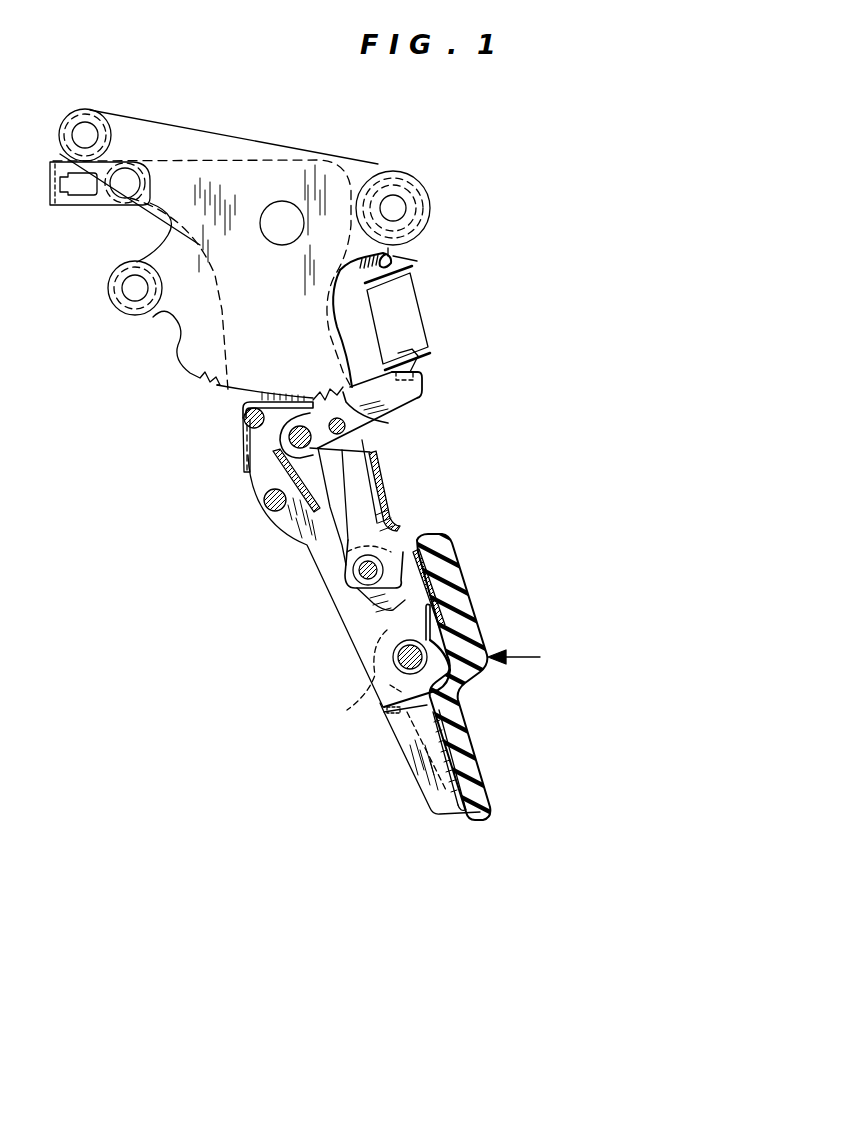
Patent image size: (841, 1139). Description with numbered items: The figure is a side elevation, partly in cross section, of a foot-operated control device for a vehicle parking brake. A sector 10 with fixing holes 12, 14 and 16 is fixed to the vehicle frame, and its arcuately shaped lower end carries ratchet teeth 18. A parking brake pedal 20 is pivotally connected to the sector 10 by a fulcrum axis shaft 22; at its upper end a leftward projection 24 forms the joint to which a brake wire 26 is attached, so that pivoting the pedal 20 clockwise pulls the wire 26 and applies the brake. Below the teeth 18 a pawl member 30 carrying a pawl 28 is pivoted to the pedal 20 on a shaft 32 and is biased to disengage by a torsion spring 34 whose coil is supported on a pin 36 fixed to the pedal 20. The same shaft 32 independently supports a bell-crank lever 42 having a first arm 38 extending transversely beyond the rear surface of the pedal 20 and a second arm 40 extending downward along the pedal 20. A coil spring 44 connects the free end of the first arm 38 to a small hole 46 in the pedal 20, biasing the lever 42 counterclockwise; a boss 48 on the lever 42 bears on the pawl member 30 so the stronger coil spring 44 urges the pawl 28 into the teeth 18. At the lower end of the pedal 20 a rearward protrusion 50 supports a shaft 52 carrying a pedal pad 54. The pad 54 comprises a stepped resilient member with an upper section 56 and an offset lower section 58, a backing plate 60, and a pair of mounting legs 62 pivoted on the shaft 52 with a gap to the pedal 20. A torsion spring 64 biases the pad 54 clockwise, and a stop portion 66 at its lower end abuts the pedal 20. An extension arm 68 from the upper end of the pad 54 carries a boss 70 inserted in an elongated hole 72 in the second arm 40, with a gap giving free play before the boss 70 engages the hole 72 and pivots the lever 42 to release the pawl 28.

The sector 10 is at (185, 137).
The fixing hole 12 is at (94, 130).
The fixing hole 14 is at (400, 205).
The fixing hole 16 is at (140, 300).
The ratchet teeth 18 is at (215, 383).
The parking brake pedal 20 is at (307, 545).
The fulcrum axis shaft 22 is at (278, 235).
The projection 24 is at (143, 215).
The brake wire 26 is at (80, 207).
The pawl 28 is at (338, 390).
The pawl member 30 is at (313, 413).
The shaft 32 is at (290, 440).
The torsion spring 34 is at (245, 470).
The pin 36 is at (246, 420).
The first arm 38 is at (422, 392).
The second arm 40 is at (333, 507).
The bell-crank lever 42 is at (370, 451).
The coil spring 44 is at (428, 300).
The small hole 46 is at (398, 260).
The boss 48 is at (396, 421).
The protrusion 50 is at (465, 680).
The shaft 52 is at (400, 660).
The pedal pad 54 is at (535, 657).
The upper section 56 is at (445, 566).
The lower section 58 is at (466, 766).
The backing plate 60 is at (430, 720).
The mounting legs 62 is at (386, 700).
The torsion spring 64 is at (435, 616).
The stop portion 66 is at (472, 814).
The extension arm 68 is at (405, 550).
The engagement pin or boss 70 is at (363, 582).
The elongated hole 72 is at (365, 570).